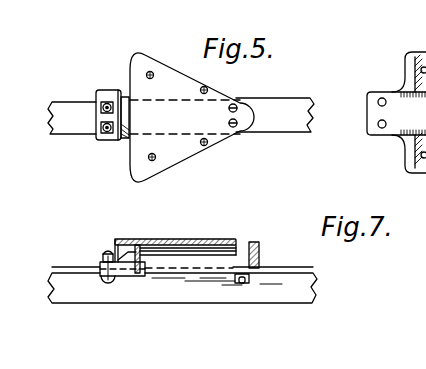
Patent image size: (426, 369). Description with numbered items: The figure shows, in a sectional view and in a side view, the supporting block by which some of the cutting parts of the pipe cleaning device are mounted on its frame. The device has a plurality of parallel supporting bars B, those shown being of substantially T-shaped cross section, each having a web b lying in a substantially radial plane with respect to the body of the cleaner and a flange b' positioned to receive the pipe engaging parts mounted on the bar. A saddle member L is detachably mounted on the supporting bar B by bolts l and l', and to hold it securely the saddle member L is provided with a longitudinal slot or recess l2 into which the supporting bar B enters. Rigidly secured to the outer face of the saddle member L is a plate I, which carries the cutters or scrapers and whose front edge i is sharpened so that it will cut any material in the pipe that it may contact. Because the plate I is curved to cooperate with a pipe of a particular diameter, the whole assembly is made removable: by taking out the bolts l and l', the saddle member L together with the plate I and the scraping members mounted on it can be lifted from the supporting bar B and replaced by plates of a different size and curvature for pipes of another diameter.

In FIG. 5, the saddle member L is at (172, 62).
In FIG. 7, the saddle member L is at (182, 237).
In FIG. 5, the bolt l is at (248, 97).
In FIG. 7, the bolt l is at (250, 300).
In FIG. 5, the bolt l' is at (105, 101).
In FIG. 7, the bolt l' is at (99, 260).
In FIG. 7, the web b is at (225, 290).
In FIG. 5, the flange b' is at (275, 115).
In FIG. 7, the flange b' is at (202, 260).
In FIG. 5, the supporting bar B is at (280, 133).
In FIG. 7, the supporting bar B is at (128, 290).
In FIG. 7, the front edge i is at (113, 240).
In FIG. 7, the longitudinal slot l2 is at (233, 266).
In FIG. 7, the plate I is at (211, 238).